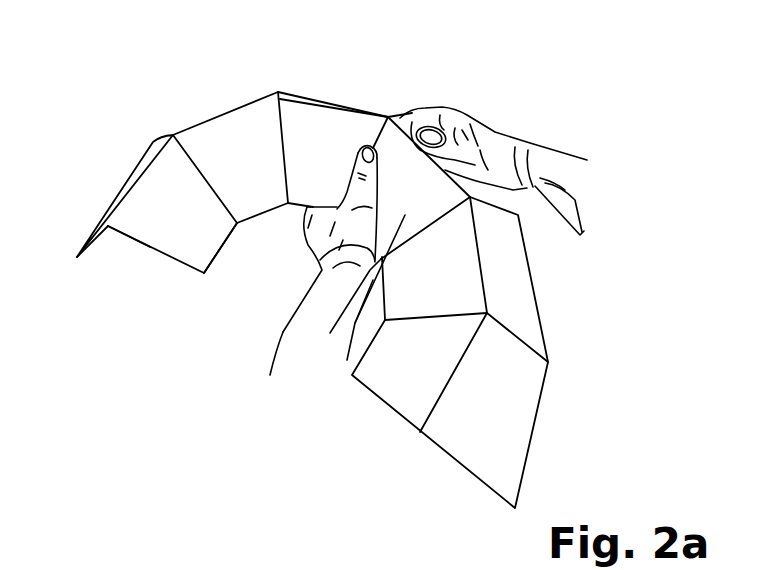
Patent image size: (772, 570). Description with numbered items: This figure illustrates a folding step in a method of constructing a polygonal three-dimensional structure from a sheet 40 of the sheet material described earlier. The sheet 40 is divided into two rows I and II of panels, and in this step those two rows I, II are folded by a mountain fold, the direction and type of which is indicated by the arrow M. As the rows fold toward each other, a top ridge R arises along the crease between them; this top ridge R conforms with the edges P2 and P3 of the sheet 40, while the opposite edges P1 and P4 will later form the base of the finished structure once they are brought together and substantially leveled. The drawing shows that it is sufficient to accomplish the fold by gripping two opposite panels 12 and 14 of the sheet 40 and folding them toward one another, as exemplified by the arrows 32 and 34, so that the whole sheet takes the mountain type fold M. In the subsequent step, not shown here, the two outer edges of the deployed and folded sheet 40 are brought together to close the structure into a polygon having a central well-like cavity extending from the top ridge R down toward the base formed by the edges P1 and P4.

The panel 12 is at (286, 264).
The panel 14 is at (357, 300).
The arrow 32 is at (582, 115).
The arrow 34 is at (297, 233).
The sheet 40 is at (580, 380).
The top ridge R is at (220, 110).
The edge P1 is at (97, 227).
The edge P2 is at (155, 157).
The edge P3 is at (122, 208).
The edge P4 is at (213, 258).
The row of panels I is at (488, 445).
The row of panels II is at (395, 387).
The mountain fold arrow M is at (435, 530).